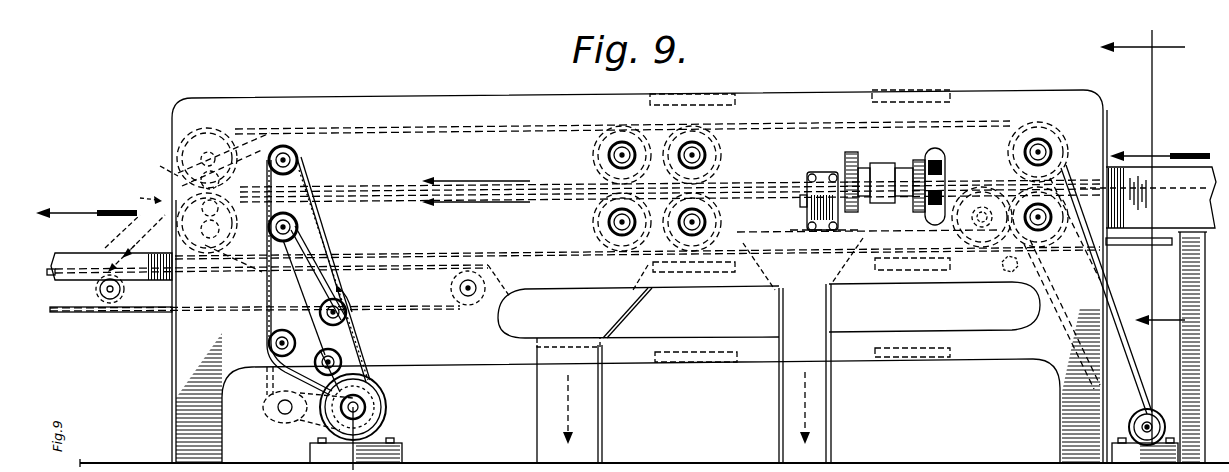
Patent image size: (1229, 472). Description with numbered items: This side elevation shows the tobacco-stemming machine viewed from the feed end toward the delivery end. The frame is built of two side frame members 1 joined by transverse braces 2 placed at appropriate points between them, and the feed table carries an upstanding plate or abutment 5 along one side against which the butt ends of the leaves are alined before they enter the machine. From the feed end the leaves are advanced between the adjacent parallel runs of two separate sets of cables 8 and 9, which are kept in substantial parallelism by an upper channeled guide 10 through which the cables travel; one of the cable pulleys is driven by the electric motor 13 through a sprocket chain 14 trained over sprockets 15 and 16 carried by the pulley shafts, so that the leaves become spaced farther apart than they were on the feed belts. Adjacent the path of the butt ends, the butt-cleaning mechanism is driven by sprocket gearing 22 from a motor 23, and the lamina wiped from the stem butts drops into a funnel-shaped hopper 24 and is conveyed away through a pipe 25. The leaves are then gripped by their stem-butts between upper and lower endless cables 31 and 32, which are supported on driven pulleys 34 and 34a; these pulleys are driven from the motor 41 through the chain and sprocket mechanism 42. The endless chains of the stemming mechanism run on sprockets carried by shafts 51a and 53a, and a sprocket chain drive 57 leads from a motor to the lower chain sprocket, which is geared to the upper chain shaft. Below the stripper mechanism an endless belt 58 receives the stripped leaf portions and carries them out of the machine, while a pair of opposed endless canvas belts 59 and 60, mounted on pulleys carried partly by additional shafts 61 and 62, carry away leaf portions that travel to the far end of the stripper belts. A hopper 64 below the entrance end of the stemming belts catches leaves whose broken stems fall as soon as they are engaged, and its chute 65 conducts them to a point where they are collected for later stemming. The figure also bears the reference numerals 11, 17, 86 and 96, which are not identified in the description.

The side frame member 1 is at (996, 102).
The transverse brace 2 is at (908, 96).
The upstanding plate or abutment 5 is at (1143, 172).
The cables 8 is at (842, 128).
The cables 9 is at (878, 252).
The upper channeled guide 10 is at (323, 306).
The section line 11 is at (1142, 229).
The electric motor 13 is at (1138, 242).
The sprocket chain 14 is at (1035, 295).
The sprocket 15 is at (1048, 140).
The sprocket 16 is at (1045, 240).
The drive pulley 17 is at (1150, 446).
The sprocket gearing 22 is at (937, 188).
The motor 23 is at (824, 172).
The funnel-shaped hopper 24 is at (610, 326).
The pipe 25 is at (592, 426).
The upper endless cable 31 is at (473, 133).
The lower endless cable 32 is at (510, 247).
The grooved driven pulley 34 is at (320, 131).
The driven pulley 34a is at (322, 232).
The motor 41 is at (388, 425).
The chain and sprocket mechanism 42 is at (262, 318).
The shaft 51a is at (620, 158).
The shaft 53a is at (620, 228).
The sprocket chain drive 57 is at (297, 406).
The endless belt 58 is at (128, 312).
The endless belt 59 is at (253, 136).
The endless belt 60 is at (262, 265).
The shaft 61 is at (141, 209).
The shaft 62 is at (99, 199).
The hopper 64 is at (833, 292).
The chute 65 is at (822, 424).
The pressure roller 86 is at (695, 158).
The pressure roller 96 is at (695, 225).